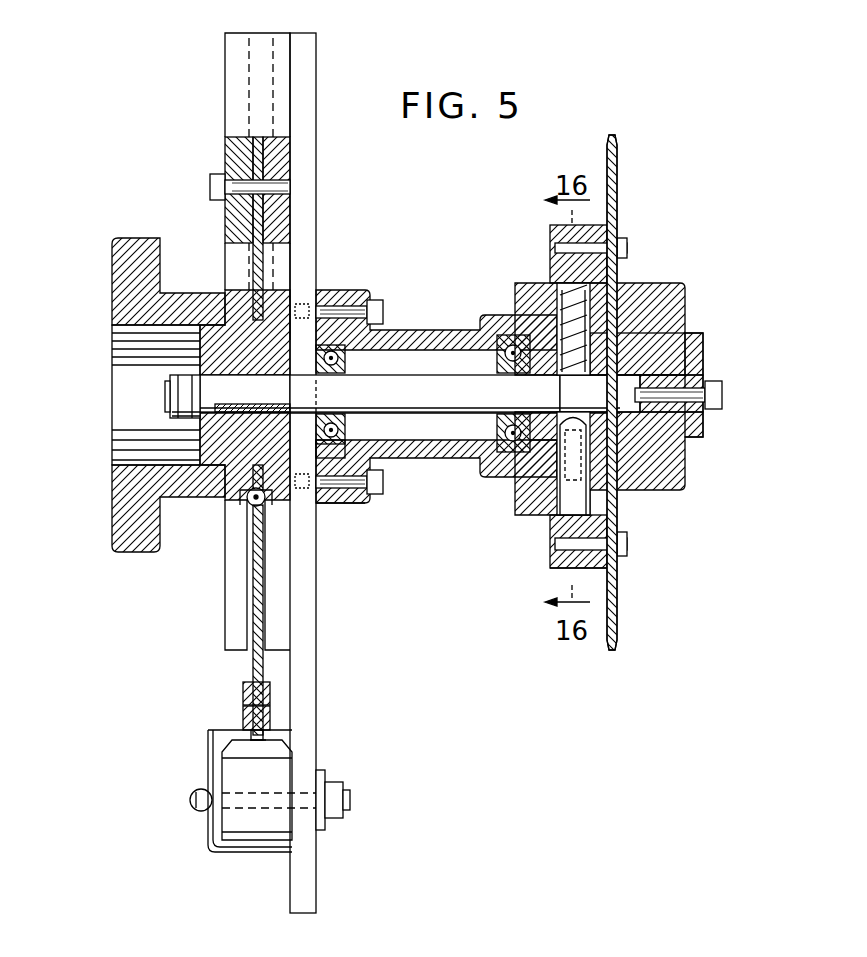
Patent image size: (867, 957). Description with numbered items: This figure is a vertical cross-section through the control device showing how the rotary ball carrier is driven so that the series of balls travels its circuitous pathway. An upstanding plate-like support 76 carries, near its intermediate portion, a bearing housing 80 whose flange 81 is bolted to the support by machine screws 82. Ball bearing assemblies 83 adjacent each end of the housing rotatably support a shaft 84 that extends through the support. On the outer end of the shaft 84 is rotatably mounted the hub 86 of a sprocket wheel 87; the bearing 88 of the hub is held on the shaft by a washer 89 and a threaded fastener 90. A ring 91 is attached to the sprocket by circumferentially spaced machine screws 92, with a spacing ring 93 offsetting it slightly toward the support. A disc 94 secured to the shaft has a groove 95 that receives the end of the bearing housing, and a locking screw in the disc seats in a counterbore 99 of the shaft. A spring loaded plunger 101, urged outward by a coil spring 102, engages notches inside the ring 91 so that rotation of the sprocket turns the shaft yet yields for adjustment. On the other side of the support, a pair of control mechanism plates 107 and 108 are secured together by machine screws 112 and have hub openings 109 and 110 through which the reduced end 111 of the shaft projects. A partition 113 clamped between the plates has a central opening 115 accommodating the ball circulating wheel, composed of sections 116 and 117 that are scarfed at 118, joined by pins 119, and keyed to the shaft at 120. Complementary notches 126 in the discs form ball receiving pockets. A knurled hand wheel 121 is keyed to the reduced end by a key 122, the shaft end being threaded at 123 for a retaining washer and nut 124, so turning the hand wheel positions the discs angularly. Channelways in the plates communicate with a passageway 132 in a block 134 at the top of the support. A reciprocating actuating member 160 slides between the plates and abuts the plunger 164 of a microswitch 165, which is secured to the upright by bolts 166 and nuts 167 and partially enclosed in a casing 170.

The upstanding support 76 is at (305, 684).
The bearing housing 80 is at (470, 460).
The flange 81 is at (345, 505).
The machine screws 82 is at (384, 490).
The ball bearing assemblies 83 is at (368, 300).
The shaft 84 is at (418, 373).
The hub 86 is at (678, 322).
The sprocket wheel 87 is at (612, 202).
The bearing 88 is at (655, 348).
The washer 89 is at (700, 345).
The threaded fastener 90 is at (722, 394).
The ring 91 is at (552, 562).
The machine screws 92 is at (630, 548).
The spacing ring 93 is at (612, 522).
The disc 94 is at (537, 512).
The groove 95 is at (545, 460).
The counterbore 99 is at (588, 408).
The spring loaded plunger 101 is at (597, 290).
The coil spring 102 is at (592, 350).
The control mechanism plate 107 is at (237, 222).
The control mechanism plate 108 is at (280, 228).
The hub opening 109 is at (244, 504).
The hub opening 110 is at (272, 497).
The reduced end 111 is at (245, 393).
The machine screws 112 is at (212, 186).
The partition 113 is at (253, 270).
The central opening 115 is at (292, 318).
The circulating wheel section 116 is at (318, 468).
The circulating wheel section 117 is at (222, 478).
The annular scarf 118 is at (238, 344).
The pins 119 is at (240, 360).
The key 120 is at (293, 410).
The knurled hand wheel 121 is at (125, 528).
The key 122 is at (210, 436).
The threaded end 123 is at (166, 392).
The retaining washer and nut 124 is at (182, 418).
The notches 126 is at (246, 500).
The passageway 132 is at (275, 86).
The block 134 is at (237, 79).
The reciprocating actuating member 160 is at (252, 666).
The plunger 164 is at (236, 738).
The microswitch 165 is at (270, 777).
The bolts 166 is at (197, 810).
The nuts 167 is at (336, 818).
The casing 170 is at (228, 855).